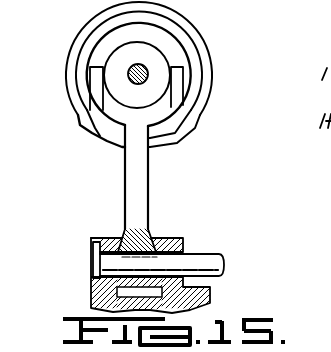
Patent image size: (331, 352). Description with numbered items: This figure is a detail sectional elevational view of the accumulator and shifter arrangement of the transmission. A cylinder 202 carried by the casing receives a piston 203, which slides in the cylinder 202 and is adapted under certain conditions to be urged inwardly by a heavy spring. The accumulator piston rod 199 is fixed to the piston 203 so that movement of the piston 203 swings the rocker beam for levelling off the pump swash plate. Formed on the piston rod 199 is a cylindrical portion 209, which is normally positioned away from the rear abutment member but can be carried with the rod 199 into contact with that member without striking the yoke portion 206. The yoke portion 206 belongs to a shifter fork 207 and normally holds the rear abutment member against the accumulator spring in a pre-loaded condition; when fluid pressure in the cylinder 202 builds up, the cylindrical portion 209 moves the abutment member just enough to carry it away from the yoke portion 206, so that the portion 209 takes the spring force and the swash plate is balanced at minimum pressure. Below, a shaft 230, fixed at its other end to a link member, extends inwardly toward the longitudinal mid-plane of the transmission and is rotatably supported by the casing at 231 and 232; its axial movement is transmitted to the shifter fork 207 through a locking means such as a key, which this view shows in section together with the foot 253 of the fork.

The accumulator piston rod 199 is at (135, 77).
The cylinder 202 is at (84, 43).
The piston 203 is at (166, 33).
The yoke portion 206 is at (178, 78).
The shifter fork 207 is at (128, 184).
The cylindrical portion 209 is at (162, 58).
The shaft 230 is at (222, 257).
The shaft support 231 is at (95, 237).
The shaft support 232 is at (177, 240).
The foot 253 is at (152, 233).